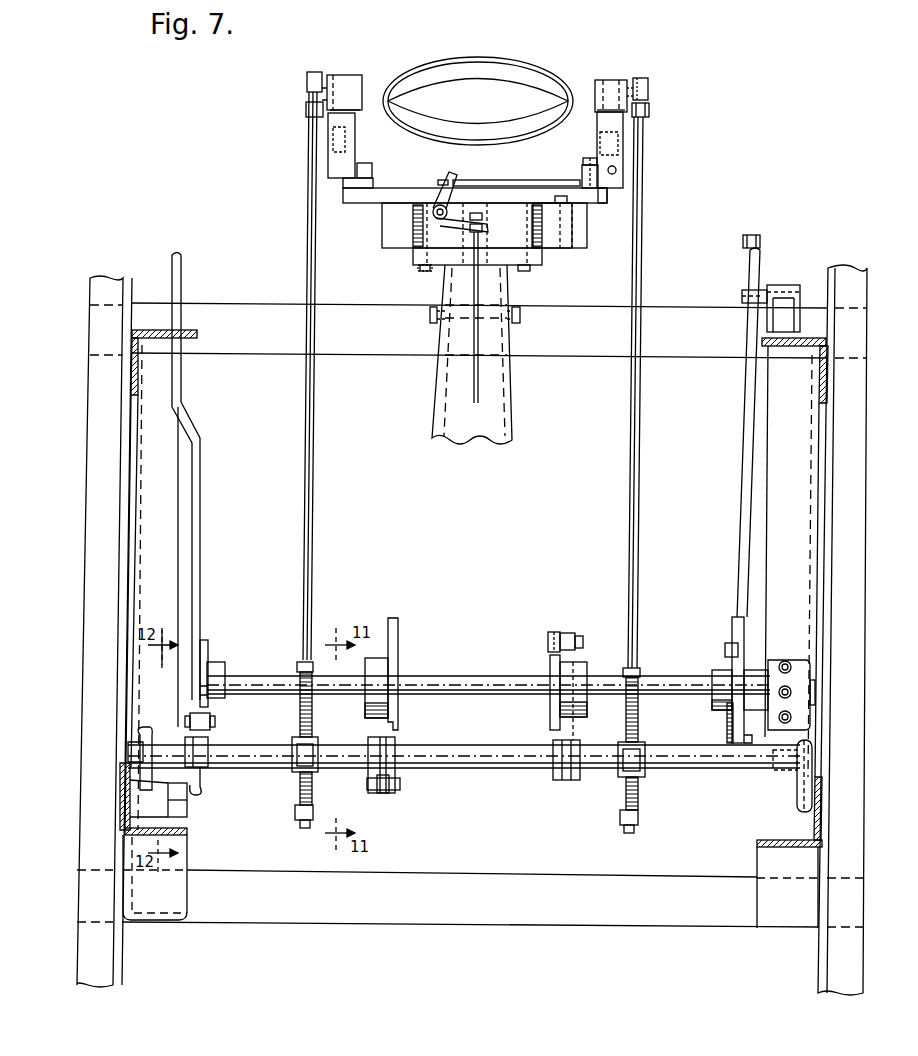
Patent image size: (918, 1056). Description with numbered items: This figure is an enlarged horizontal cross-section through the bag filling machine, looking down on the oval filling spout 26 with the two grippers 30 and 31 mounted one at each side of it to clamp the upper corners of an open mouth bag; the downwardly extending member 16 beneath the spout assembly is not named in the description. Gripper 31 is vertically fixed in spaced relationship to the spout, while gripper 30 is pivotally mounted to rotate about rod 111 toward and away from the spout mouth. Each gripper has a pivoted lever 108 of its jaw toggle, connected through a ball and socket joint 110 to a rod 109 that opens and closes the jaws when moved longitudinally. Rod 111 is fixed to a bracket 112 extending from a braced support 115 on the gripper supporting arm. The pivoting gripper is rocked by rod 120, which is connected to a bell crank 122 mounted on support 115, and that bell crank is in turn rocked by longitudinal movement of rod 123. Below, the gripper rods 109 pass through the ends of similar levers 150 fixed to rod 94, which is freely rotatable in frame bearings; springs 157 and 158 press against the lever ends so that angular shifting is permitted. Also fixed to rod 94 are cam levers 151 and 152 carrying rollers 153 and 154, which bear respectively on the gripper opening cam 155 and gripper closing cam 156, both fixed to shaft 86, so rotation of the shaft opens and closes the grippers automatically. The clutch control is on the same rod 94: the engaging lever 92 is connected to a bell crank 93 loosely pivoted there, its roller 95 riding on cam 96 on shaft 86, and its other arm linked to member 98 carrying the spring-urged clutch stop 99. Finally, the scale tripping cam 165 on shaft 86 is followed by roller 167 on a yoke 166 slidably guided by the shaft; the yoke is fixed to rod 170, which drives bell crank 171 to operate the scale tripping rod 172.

The funnel / discharge chute 16 is at (510, 398).
The filling spout 26 is at (502, 64).
The gripper 30 is at (609, 75).
The gripper 31 is at (341, 74).
The shaft 86 is at (416, 678).
The engaging lever 92 is at (200, 597).
The bell crank 93 is at (206, 768).
The rod 94 is at (462, 770).
The roller 95 is at (212, 728).
The cam 96 is at (210, 652).
The member 98 is at (180, 815).
The clutch stop 99 is at (196, 797).
The pivoted lever 108 is at (650, 106).
The rod 109 is at (308, 240).
The ball and socket joint 110 is at (639, 80).
The rod 111 is at (603, 200).
The bracket 112 is at (584, 168).
The braced support 115 is at (580, 205).
The rod 120 is at (527, 172).
The bell crank 122 is at (438, 200).
The rod 123 is at (476, 396).
The levers 150 is at (298, 772).
The cam lever 151 is at (372, 778).
The cam lever 152 is at (577, 730).
The roller 153 is at (396, 800).
The roller 154 is at (560, 630).
The gripper opening cam 155 is at (396, 636).
The gripper closing cam 156 is at (551, 715).
The spring 157 is at (300, 797).
The spring 158 is at (300, 713).
The cam 165 is at (740, 716).
The yoke 166 is at (734, 640).
The cam following roller 167 is at (726, 647).
The rod 170 is at (746, 468).
The bell crank 171 is at (758, 266).
The scale tripping rod 172 is at (745, 250).